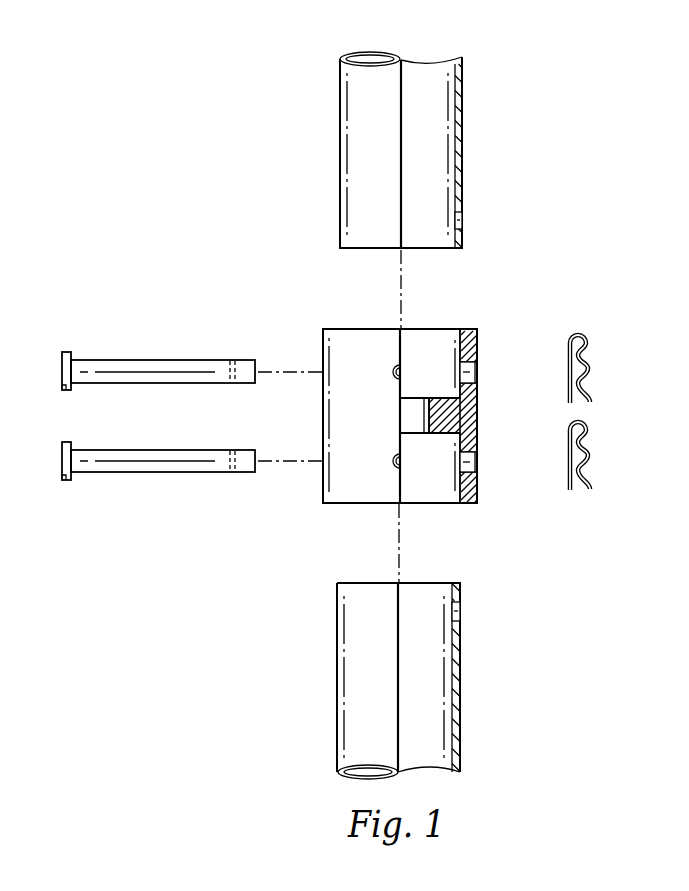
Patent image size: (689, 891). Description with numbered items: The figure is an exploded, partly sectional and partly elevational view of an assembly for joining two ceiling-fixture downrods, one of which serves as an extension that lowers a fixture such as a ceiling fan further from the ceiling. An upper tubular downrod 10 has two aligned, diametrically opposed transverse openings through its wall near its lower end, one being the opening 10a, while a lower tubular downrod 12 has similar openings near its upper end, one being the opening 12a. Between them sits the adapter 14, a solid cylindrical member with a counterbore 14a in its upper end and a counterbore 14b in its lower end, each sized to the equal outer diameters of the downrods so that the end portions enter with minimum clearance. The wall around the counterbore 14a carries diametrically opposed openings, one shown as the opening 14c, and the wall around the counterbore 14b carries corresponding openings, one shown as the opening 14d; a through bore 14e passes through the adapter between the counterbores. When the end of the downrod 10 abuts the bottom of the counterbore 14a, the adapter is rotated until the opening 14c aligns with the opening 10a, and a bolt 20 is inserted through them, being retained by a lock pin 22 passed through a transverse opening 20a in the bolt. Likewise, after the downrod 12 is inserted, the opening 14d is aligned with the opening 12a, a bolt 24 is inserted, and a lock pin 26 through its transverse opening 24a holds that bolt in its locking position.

The downrod 10 is at (345, 138).
The transverse opening 10a is at (462, 222).
The downrod 12 is at (336, 692).
The transverse opening 12a is at (459, 612).
The adapter 14 is at (347, 322).
The counterbore 14a is at (457, 338).
The counterbore 14b is at (458, 490).
The opening 14c is at (468, 373).
The opening 14d is at (468, 462).
The through bore 14e is at (420, 418).
The bolt 20 is at (146, 360).
The transverse opening 20a is at (222, 368).
The lock pin 22 is at (592, 343).
The bolt 24 is at (147, 472).
The transverse opening 24a is at (222, 466).
The lock pin 26 is at (592, 430).